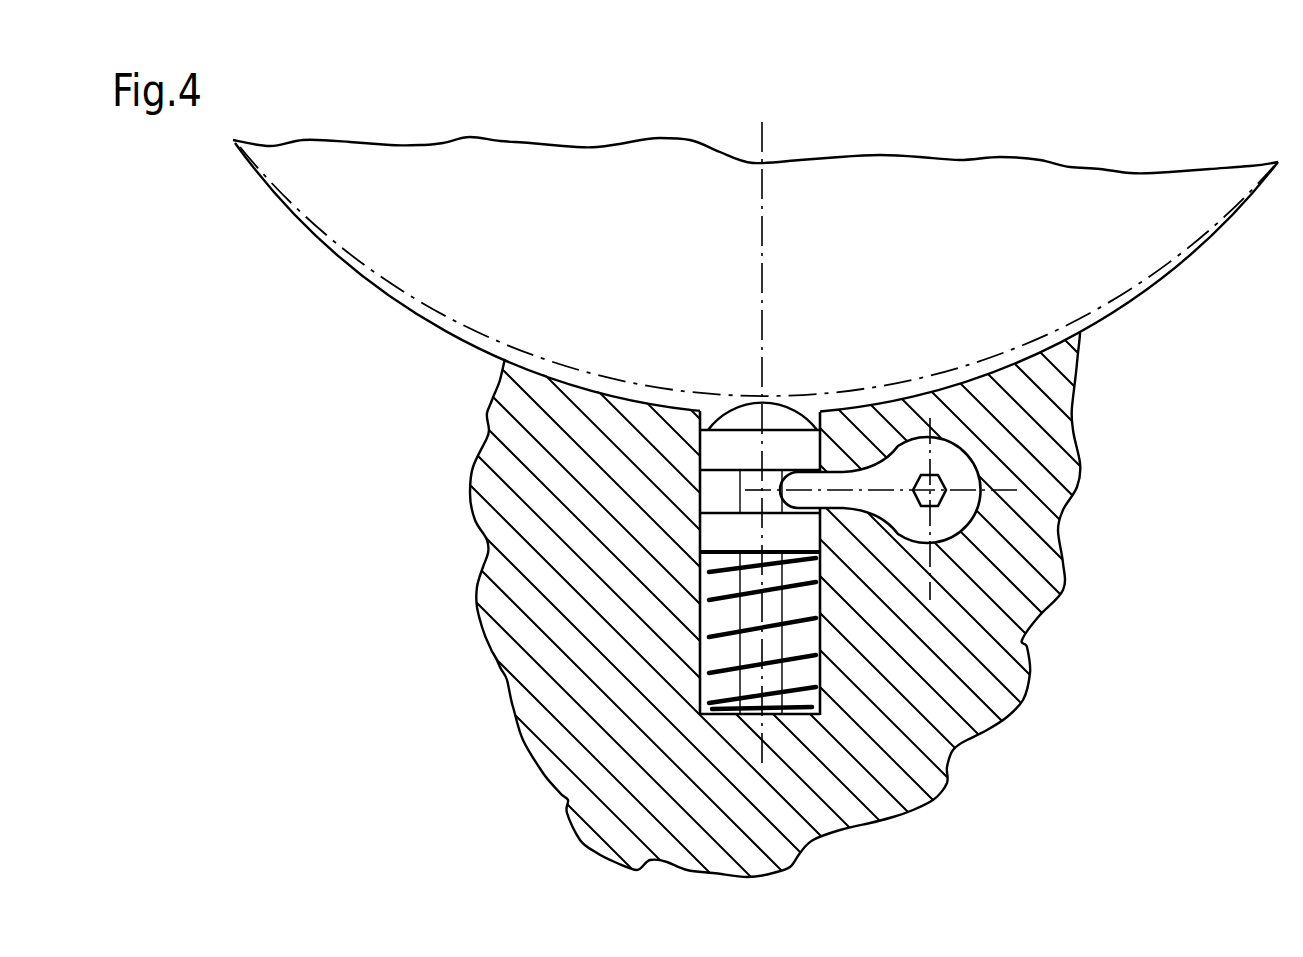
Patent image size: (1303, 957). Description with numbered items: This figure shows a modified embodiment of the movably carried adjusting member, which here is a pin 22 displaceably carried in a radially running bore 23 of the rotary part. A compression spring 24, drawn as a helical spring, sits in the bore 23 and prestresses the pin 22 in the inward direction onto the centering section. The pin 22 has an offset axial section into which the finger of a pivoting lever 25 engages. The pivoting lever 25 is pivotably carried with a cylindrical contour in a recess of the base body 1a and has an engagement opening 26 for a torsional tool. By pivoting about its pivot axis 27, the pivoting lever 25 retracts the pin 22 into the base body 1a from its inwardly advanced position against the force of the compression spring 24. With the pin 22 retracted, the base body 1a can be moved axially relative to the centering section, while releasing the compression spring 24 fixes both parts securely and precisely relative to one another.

The base body 1a is at (960, 660).
The pin 22 is at (727, 533).
The bore 23 is at (727, 605).
The compression spring 24 is at (700, 659).
The pivoting lever 25 is at (947, 523).
The engagement opening 26 is at (948, 488).
The pivot axis 27 is at (950, 495).